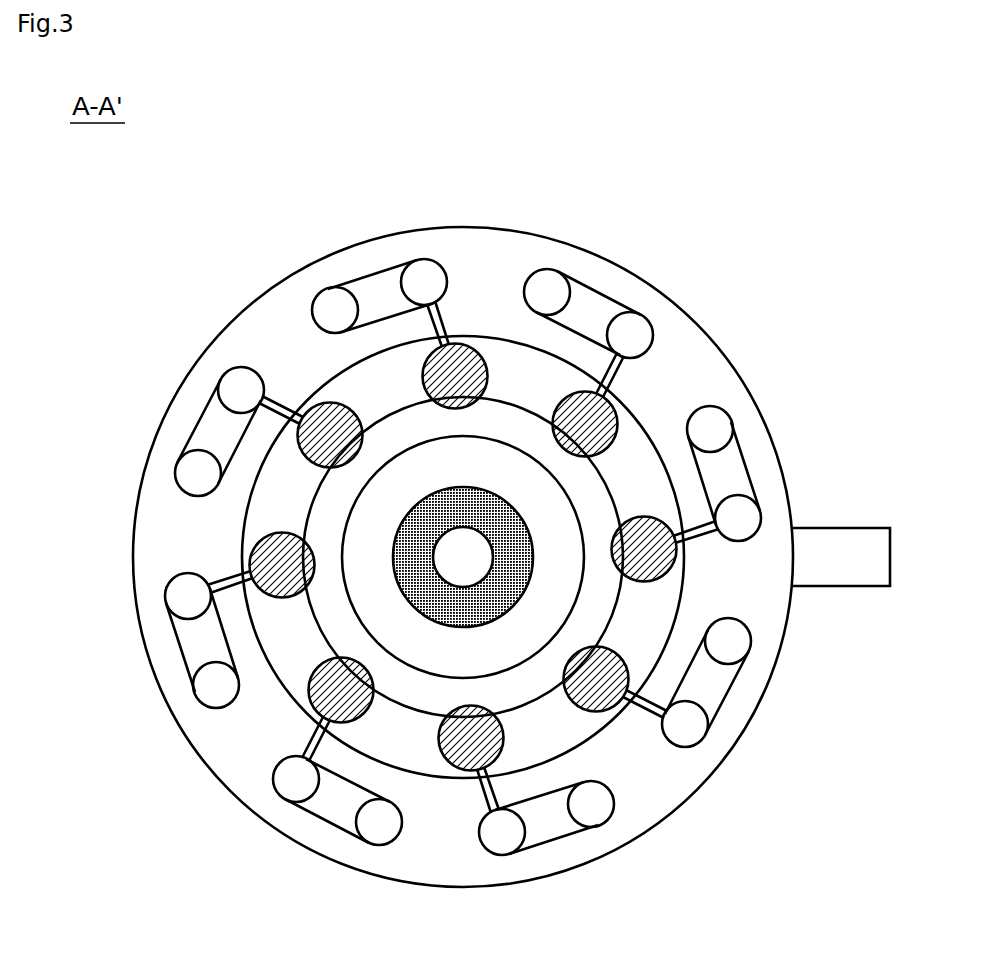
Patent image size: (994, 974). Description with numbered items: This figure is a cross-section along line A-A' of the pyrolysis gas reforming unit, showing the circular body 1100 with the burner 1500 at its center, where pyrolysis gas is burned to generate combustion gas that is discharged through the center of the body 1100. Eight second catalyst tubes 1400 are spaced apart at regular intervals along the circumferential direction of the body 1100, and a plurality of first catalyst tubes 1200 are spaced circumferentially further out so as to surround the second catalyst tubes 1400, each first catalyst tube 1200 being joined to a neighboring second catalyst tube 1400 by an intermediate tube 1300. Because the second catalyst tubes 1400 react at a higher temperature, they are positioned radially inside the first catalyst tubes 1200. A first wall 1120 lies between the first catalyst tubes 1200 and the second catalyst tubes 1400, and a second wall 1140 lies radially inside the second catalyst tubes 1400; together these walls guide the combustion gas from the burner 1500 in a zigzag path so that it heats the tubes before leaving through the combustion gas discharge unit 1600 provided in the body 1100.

The body 1100 is at (463, 523).
The first wall 1120 is at (462, 333).
The second wall 1140 is at (352, 508).
The first catalyst tube 1200 is at (463, 507).
The intermediate tube 1300 is at (632, 366).
The second catalyst tube 1400 is at (617, 418).
The burner 1500 is at (500, 565).
The combustion gas discharge unit 1600 is at (863, 481).